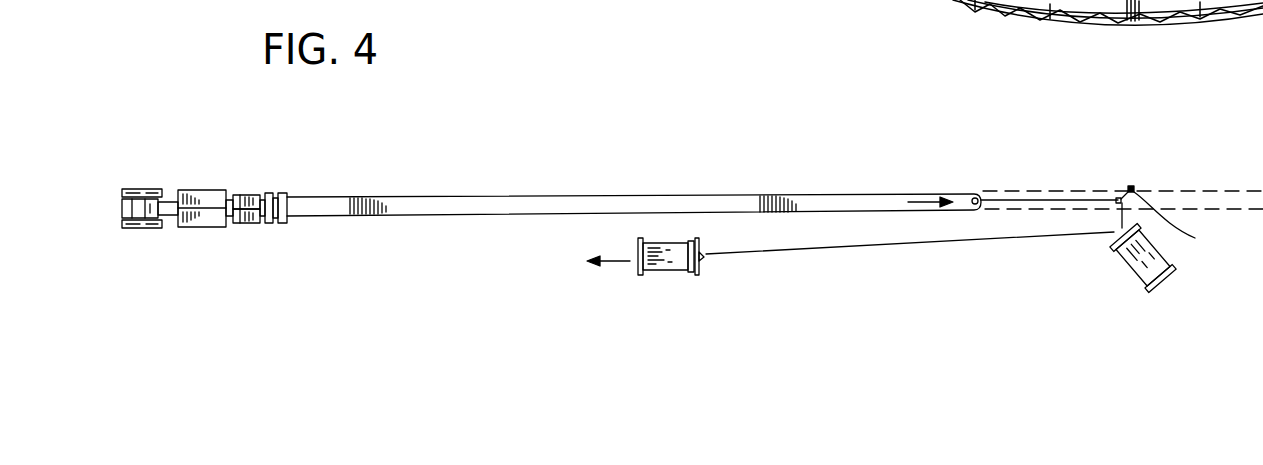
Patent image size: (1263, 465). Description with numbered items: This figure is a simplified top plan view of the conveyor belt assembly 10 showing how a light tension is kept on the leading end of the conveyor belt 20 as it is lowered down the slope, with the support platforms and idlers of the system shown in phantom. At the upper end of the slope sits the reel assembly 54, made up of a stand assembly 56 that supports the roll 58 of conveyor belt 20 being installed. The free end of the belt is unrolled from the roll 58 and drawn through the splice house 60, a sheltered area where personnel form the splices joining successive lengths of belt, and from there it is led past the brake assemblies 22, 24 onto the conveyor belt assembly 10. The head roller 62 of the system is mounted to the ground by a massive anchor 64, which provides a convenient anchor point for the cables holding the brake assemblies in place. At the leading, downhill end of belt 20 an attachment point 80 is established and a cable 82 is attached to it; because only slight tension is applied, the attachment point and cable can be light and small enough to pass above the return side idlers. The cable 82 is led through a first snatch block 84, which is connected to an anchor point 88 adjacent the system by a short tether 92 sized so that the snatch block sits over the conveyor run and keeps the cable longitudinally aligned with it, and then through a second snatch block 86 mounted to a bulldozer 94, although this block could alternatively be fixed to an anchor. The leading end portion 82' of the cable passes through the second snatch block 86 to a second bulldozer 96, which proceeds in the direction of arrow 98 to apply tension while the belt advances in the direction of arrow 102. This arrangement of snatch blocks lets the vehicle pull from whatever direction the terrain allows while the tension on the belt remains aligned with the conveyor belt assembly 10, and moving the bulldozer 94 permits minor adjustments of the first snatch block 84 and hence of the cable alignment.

The conveyor belt assembly 10 is at (583, 183).
The conveyor belt 20 is at (632, 200).
The brake assembly 22 is at (270, 195).
The brake assembly 24 is at (283, 198).
The reel assembly 54 is at (146, 185).
The stand assembly 56 is at (153, 230).
The roll 58 is at (162, 200).
The splice house 60 is at (207, 197).
The head roller 62 is at (243, 195).
The anchor 64 is at (232, 227).
The attachment point 80 is at (973, 200).
The cable 82 is at (1055, 167).
The leading end portion of cable 82' is at (910, 261).
The first snatch block 84 is at (1118, 202).
The second snatch block 86 is at (1112, 232).
The anchor point 88 is at (1134, 190).
The short tether 92 is at (1195, 238).
The bulldozer 94 is at (1176, 254).
The second bulldozer 96 is at (681, 273).
The arrow 98 is at (613, 262).
The arrow 102 is at (920, 200).